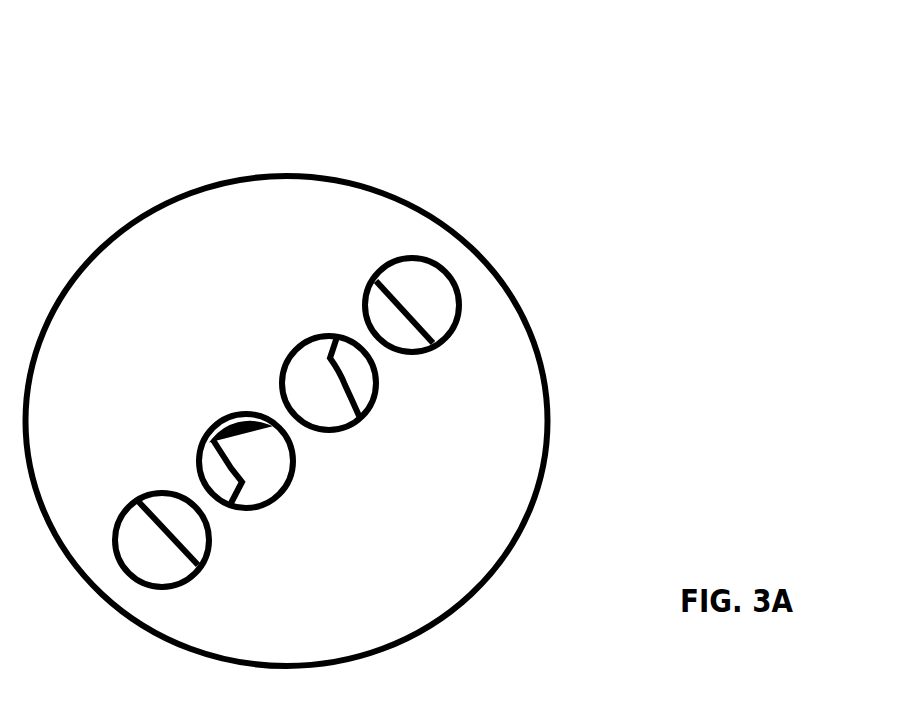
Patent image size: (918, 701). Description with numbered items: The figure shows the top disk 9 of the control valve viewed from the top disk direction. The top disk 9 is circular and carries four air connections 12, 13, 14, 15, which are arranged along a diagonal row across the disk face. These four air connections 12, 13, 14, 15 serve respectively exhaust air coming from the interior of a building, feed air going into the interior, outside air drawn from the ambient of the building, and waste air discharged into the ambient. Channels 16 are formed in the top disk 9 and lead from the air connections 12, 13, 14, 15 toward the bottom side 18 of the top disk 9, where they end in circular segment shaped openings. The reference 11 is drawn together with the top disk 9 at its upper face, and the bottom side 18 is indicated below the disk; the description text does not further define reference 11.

The top disk 9 is at (328, 371).
The first surface of lens element 11 is at (532, 178).
The bottom side 18 is at (547, 700).
The air connection 12 is at (273, 470).
The air connection 13 is at (292, 387).
The air connection 14 is at (196, 547).
The air connection 15 is at (370, 301).
The channels 16 is at (287, 422).